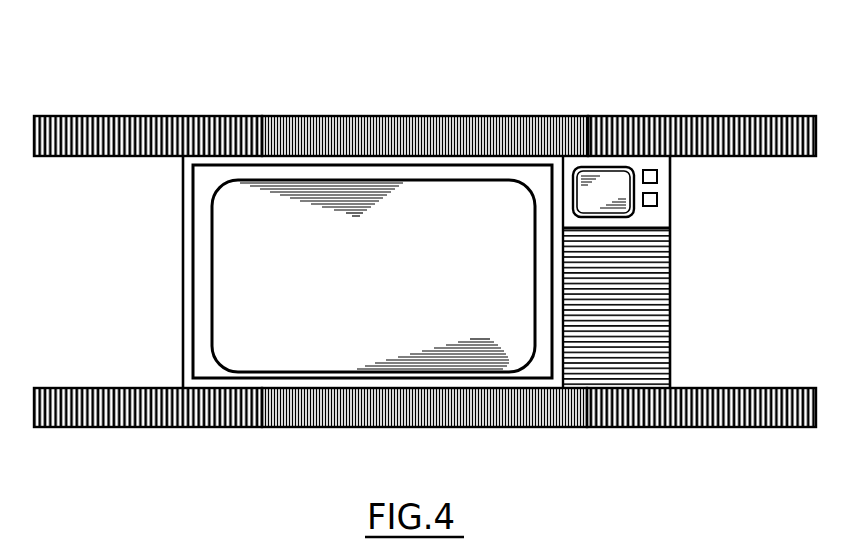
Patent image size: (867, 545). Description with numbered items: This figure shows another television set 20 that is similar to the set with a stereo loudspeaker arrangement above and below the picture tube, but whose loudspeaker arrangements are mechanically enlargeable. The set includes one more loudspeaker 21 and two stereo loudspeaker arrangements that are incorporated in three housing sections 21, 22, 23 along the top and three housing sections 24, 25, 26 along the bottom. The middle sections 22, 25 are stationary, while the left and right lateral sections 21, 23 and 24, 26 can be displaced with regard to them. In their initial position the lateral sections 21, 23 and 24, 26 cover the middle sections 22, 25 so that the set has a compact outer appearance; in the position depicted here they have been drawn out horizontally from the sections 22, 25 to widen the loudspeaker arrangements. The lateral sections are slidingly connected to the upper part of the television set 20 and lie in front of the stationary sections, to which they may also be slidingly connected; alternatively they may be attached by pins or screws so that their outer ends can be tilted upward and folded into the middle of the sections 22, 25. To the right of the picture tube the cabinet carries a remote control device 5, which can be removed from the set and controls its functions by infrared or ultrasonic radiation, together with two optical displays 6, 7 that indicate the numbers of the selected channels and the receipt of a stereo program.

The television set 20 is at (586, 94).
The loudspeaker / left housing section 21 is at (150, 117).
The middle housing section 22 is at (391, 117).
The right housing section 23 is at (703, 117).
The left housing section 24 is at (152, 427).
The middle housing section 25 is at (425, 427).
The right housing section 26 is at (701, 427).
The remote control device 5 is at (637, 272).
The optical display 6 is at (642, 196).
The optical display 7 is at (677, 216).